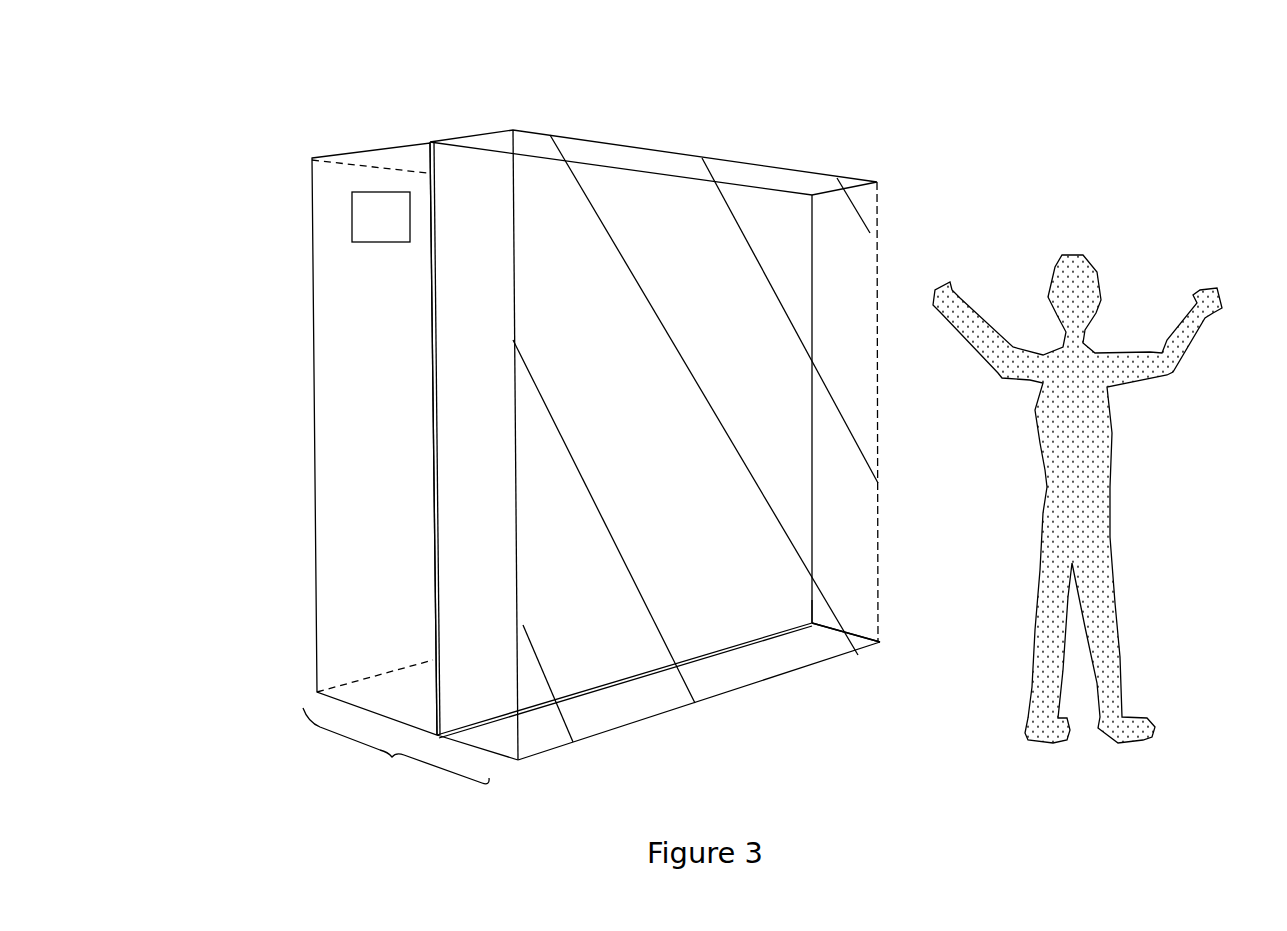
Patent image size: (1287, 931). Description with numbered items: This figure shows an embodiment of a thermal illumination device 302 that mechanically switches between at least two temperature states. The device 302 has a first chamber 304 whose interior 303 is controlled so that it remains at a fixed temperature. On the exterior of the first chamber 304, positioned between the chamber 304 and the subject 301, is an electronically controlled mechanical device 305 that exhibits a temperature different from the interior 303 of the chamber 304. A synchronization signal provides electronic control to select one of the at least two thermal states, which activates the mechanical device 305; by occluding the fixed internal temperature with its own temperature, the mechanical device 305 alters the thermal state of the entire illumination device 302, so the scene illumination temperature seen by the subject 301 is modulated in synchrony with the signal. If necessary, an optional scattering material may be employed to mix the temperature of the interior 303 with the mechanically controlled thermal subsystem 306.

The subject 301 is at (1100, 284).
The thermal illumination device 302 is at (390, 758).
The interior of the first chamber 303 is at (385, 187).
The first chamber 304 is at (310, 295).
The electronically controlled mechanical device 305 is at (602, 133).
The mechanically controlled thermal subsystem 306 is at (835, 622).